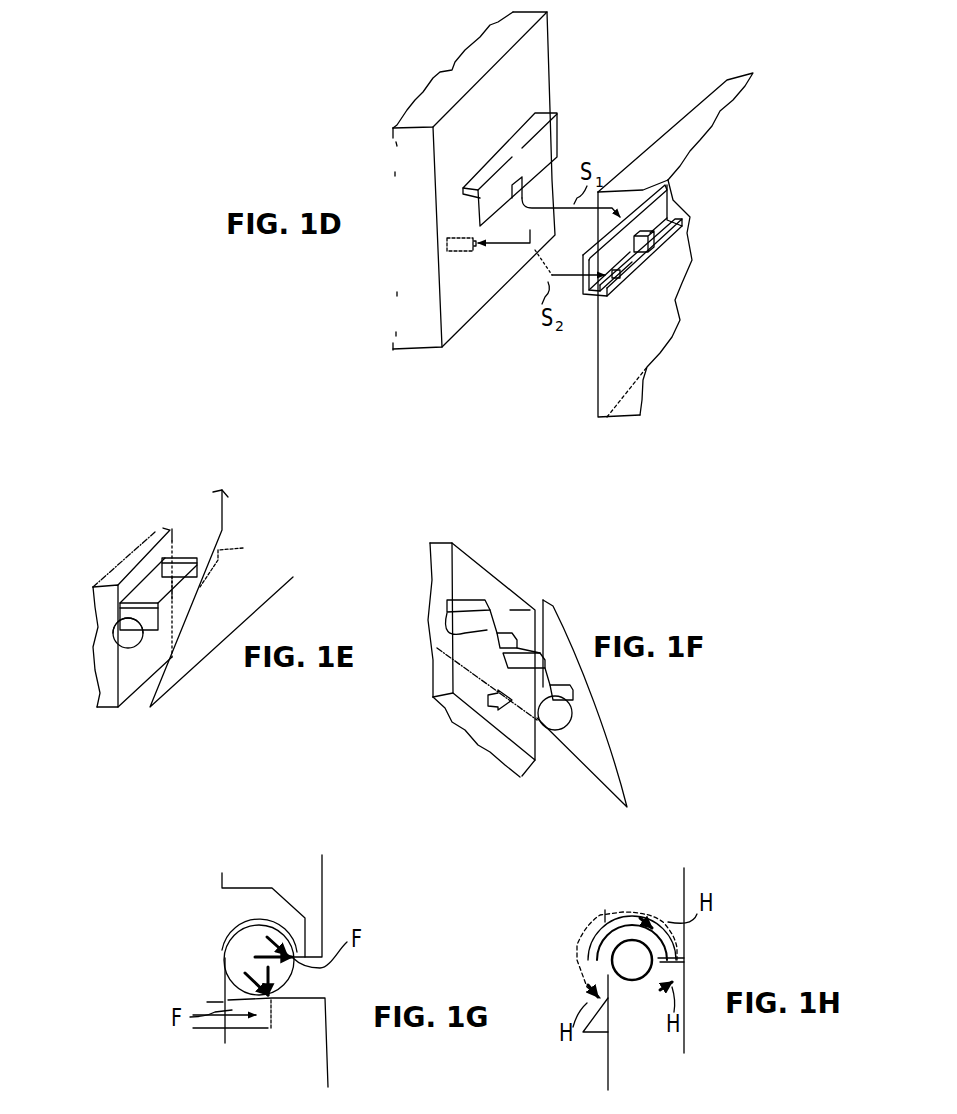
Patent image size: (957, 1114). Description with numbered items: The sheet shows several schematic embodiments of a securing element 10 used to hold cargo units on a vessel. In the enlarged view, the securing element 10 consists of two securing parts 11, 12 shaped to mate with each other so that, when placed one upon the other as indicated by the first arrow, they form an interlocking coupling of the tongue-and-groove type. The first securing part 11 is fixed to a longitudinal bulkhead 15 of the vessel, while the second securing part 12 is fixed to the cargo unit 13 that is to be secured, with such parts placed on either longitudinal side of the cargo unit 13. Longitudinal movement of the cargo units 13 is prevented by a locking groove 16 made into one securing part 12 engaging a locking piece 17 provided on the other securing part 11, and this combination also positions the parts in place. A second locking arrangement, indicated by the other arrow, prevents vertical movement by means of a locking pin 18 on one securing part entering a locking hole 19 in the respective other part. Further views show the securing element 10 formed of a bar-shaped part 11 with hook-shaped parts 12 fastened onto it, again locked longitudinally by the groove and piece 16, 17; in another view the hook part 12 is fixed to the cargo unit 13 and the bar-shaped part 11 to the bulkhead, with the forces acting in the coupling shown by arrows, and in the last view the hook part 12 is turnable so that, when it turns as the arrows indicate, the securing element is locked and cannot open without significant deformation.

In FIG. 1E, the securing element 10 is at (190, 494).
In FIG. 1F, the securing element 10 is at (588, 625).
In FIG. 1G, the securing element 10 is at (288, 882).
In FIG. 1H, the securing element 10 is at (565, 942).
In FIG. 1D, the first securing part 11 is at (682, 208).
In FIG. 1E, the first securing part 11 is at (118, 650).
In FIG. 1F, the first securing part 11 is at (560, 730).
In FIG. 1G, the first securing part 11 is at (232, 958).
In FIG. 1H, the first securing part 11 is at (628, 988).
In FIG. 1D, the second securing part 12 is at (555, 132).
In FIG. 1E, the second securing part 12 is at (153, 548).
In FIG. 1F, the second securing part 12 is at (535, 600).
In FIG. 1G, the second securing part 12 is at (303, 912).
In FIG. 1H, the second securing part 12 is at (643, 912).
In FIG. 1D, the cargo unit 13 is at (543, 32).
In FIG. 1E, the cargo unit 13 is at (98, 575).
In FIG. 1F, the cargo unit 13 is at (463, 558).
In FIG. 1E, the longitudinal bulkhead 15 is at (175, 678).
In FIG. 1F, the longitudinal bulkhead 15 is at (607, 758).
In FIG. 1D, the locking groove 16 is at (520, 208).
In FIG. 1E, the locking groove 16 is at (200, 592).
In FIG. 1F, the locking groove 16 is at (567, 697).
In FIG. 1G, the locking groove 16 is at (270, 1032).
In FIG. 1D, the locking piece 17 is at (652, 246).
In FIG. 1D, the locking pin 18 is at (460, 253).
In FIG. 1D, the locking hole 19 is at (632, 277).